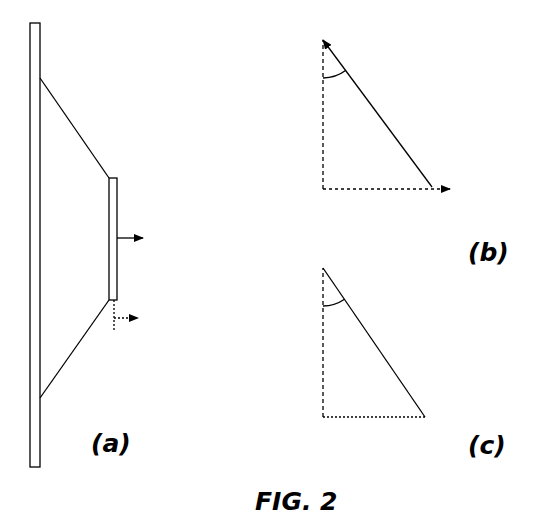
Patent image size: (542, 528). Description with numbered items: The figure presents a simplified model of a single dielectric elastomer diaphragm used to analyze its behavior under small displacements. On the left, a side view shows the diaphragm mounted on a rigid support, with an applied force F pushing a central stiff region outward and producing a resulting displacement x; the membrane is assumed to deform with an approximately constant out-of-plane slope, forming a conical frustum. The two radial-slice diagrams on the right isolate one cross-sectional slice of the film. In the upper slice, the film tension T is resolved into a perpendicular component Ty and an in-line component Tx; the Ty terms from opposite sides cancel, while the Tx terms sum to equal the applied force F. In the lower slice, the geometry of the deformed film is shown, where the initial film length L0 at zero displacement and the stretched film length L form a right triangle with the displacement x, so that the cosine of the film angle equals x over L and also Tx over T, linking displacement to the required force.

The applied force F is at (297, 215).
The displacement x is at (269, 375).
The film tension T is at (377, 113).
The vertical film tension component Ty is at (308, 114).
The horizontal film tension component Tx is at (381, 211).
The film length L is at (374, 342).
The initial film length L0 is at (307, 342).